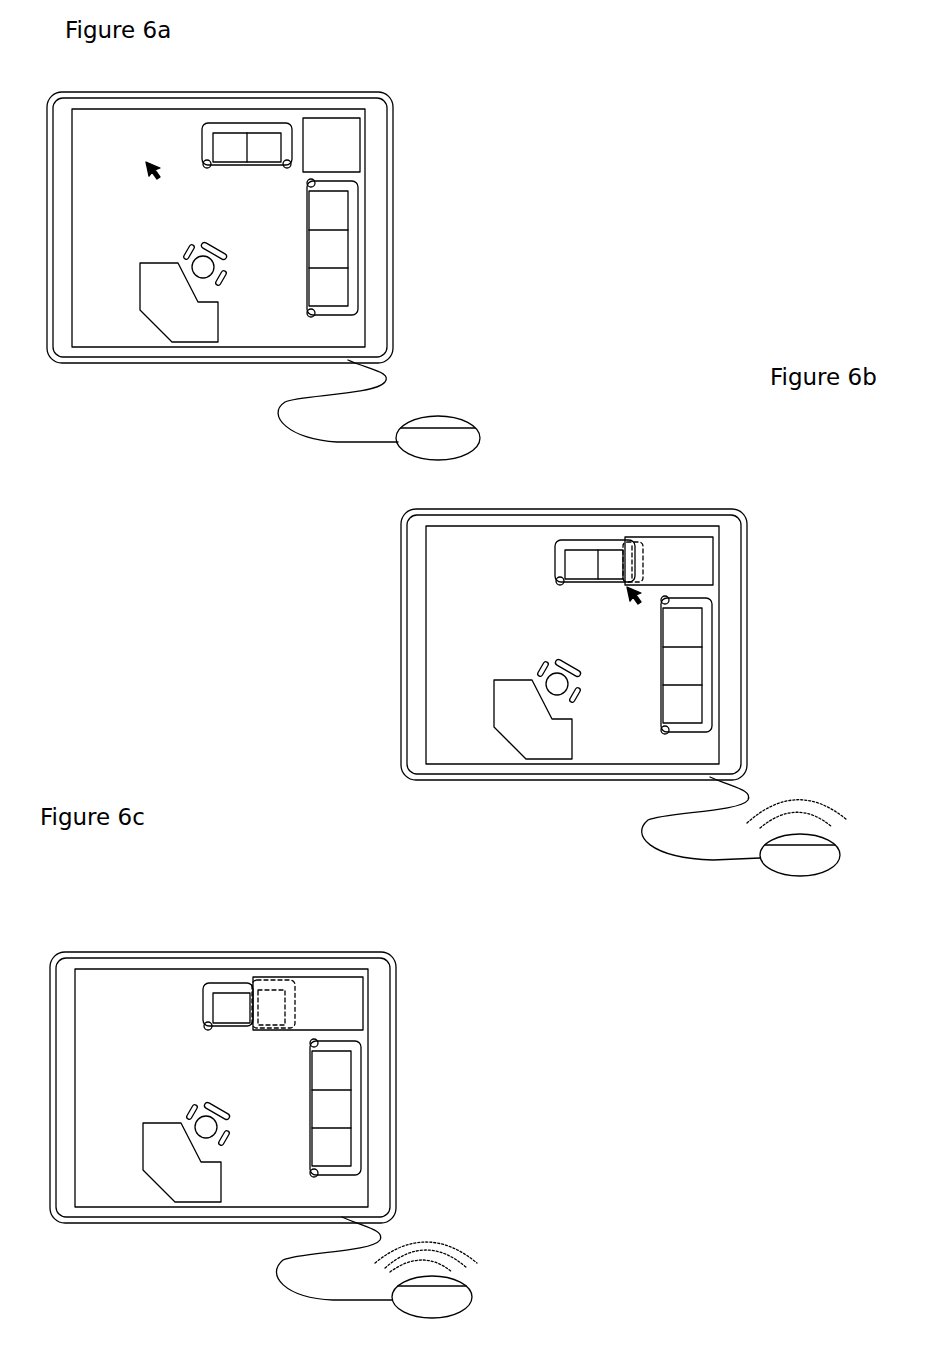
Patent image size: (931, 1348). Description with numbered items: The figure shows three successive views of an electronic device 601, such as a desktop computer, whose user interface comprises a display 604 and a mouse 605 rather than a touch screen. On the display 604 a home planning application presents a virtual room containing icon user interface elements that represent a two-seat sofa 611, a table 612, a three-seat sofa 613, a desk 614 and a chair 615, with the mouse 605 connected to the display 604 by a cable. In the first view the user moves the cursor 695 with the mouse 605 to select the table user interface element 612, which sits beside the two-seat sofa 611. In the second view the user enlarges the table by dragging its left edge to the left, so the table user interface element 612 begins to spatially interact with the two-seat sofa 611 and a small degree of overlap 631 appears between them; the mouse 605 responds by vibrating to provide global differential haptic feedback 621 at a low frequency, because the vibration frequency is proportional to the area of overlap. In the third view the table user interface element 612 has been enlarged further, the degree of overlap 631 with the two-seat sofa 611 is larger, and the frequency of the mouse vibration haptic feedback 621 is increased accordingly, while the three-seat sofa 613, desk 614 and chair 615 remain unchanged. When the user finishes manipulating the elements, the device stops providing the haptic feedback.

In FIG. 6A, the electronic device 601 is at (552, 142).
In FIG. 6A, the display 604 is at (267, 320).
In FIG. 6B, the display 604 is at (574, 644).
In FIG. 6C, the display 604 is at (112, 1008).
In FIG. 6A, the mouse 605 is at (458, 450).
In FIG. 6B, the mouse 605 is at (787, 863).
In FIG. 6C, the mouse 605 is at (450, 1300).
In FIG. 6A, the two-seat sofa user interface element 611 is at (253, 143).
In FIG. 6B, the two-seat sofa user interface element 611 is at (592, 555).
In FIG. 6C, the two-seat sofa user interface element 611 is at (232, 995).
In FIG. 6A, the table user interface element 612 is at (348, 152).
In FIG. 6B, the table user interface element 612 is at (675, 552).
In FIG. 6C, the table user interface element 612 is at (340, 1002).
In FIG. 6A, the three-seat sofa user interface element 613 is at (358, 225).
In FIG. 6B, the three-seat sofa user interface element 613 is at (697, 650).
In FIG. 6C, the three-seat sofa user interface element 613 is at (350, 1113).
In FIG. 6A, the desk user interface element 614 is at (197, 320).
In FIG. 6B, the desk user interface element 614 is at (542, 742).
In FIG. 6C, the desk user interface element 614 is at (167, 1158).
In FIG. 6A, the chair user interface element 615 is at (200, 263).
In FIG. 6B, the chair user interface element 615 is at (558, 683).
In FIG. 6C, the chair user interface element 615 is at (207, 1125).
In FIG. 6B, the global differential haptic feedback 621 is at (818, 805).
In FIG. 6C, the global differential haptic feedback 621 is at (443, 1243).
In FIG. 6B, the degree of overlap 631 is at (628, 542).
In FIG. 6C, the degree of overlap 631 is at (267, 1005).
In FIG. 6A, the cursor 695 is at (158, 165).
In FIG. 6B, the cursor 695 is at (647, 590).